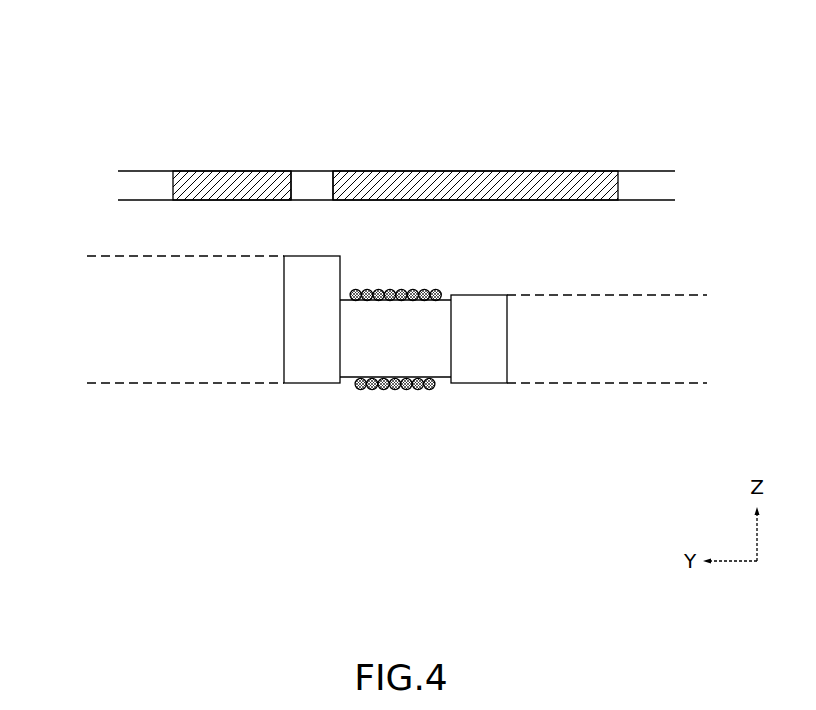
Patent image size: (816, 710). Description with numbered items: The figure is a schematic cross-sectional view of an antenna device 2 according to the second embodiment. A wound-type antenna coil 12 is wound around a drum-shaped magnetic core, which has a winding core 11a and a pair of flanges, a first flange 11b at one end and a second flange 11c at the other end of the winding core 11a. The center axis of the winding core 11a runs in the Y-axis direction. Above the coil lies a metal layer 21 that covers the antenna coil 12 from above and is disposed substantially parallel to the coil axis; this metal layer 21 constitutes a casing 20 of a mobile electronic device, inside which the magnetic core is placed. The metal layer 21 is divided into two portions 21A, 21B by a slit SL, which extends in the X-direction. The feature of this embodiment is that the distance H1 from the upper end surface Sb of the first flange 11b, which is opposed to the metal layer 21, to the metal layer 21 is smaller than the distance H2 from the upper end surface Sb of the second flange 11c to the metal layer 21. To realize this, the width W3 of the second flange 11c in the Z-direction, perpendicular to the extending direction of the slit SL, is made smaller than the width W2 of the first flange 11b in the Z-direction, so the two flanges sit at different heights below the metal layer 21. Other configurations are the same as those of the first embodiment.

The antenna device 2 is at (498, 46).
The casing 20 is at (124, 188).
The metal layer 21 is at (353, 133).
The metal layer portion 21A is at (173, 164).
The metal layer portion 21B is at (618, 164).
The slit SL is at (302, 182).
The winding core 11a is at (388, 336).
The first flange 11b is at (284, 283).
The second flange 11c is at (507, 310).
The antenna coil 12 is at (393, 391).
The upper end surface Sb is at (301, 256).
The distance H1 is at (162, 200).
The distance H2 is at (629, 200).
The width of first flange W2 is at (118, 256).
The width of second flange W3 is at (673, 295).